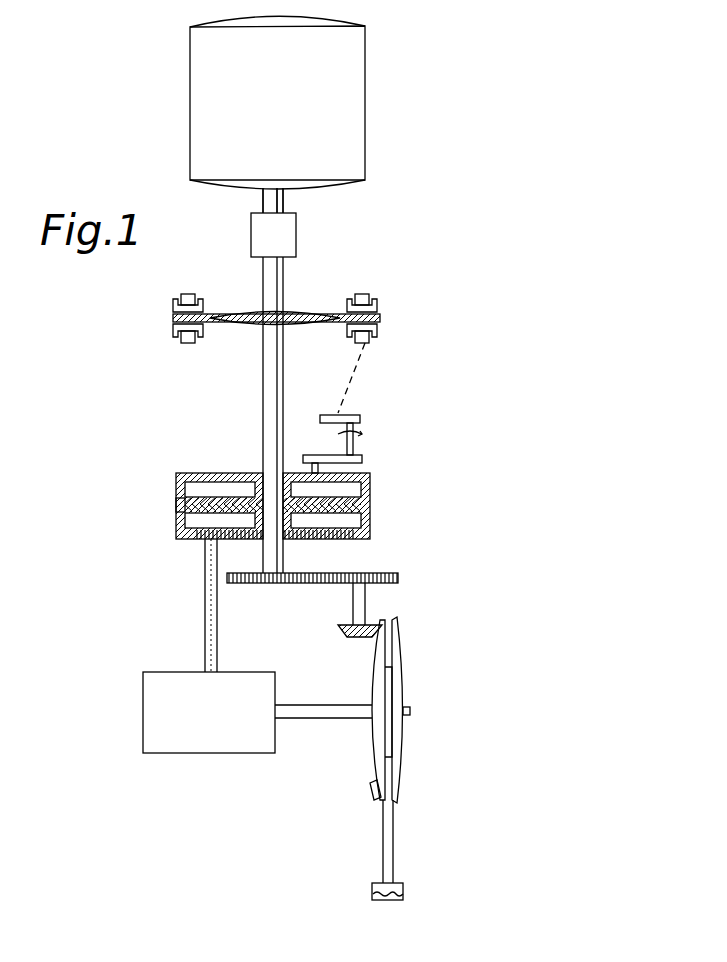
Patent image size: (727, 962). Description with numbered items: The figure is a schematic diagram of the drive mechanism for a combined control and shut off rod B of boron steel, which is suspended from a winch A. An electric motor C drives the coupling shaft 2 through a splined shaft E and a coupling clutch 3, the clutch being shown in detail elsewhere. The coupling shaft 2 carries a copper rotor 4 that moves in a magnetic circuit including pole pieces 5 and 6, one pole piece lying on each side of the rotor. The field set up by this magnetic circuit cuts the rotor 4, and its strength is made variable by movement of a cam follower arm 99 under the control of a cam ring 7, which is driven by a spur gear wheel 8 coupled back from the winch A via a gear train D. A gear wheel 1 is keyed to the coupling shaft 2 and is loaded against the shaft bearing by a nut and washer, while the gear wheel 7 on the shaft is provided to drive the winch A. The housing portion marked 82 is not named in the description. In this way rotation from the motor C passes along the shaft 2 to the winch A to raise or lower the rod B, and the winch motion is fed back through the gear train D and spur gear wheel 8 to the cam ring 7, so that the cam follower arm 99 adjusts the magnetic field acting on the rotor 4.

The electric motor C is at (350, 113).
The splined shaft E is at (273, 204).
The coupling clutch 3 is at (285, 240).
The coupling shaft 2 is at (268, 388).
The rotor 4 is at (380, 318).
The pole piece 5 is at (203, 306).
The pole piece 6 is at (203, 330).
The cam follower arm 99 is at (362, 457).
The gear wheel 7 is at (372, 487).
The housing wall 82 is at (178, 524).
The spur gear wheel 8 is at (200, 545).
The gear wheel 1 is at (295, 585).
The gear train D is at (257, 712).
The winch A is at (397, 697).
The combined control and shut off rod B is at (372, 893).